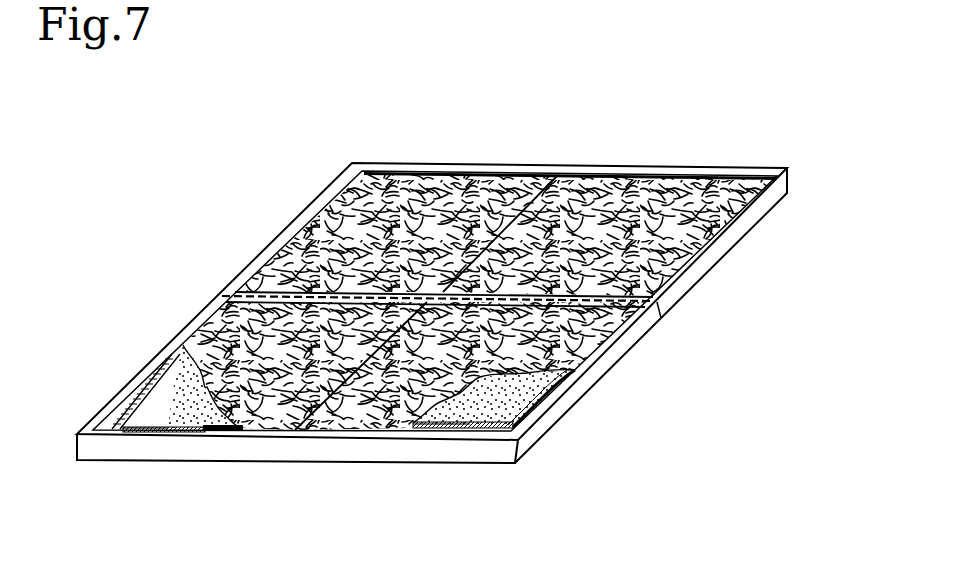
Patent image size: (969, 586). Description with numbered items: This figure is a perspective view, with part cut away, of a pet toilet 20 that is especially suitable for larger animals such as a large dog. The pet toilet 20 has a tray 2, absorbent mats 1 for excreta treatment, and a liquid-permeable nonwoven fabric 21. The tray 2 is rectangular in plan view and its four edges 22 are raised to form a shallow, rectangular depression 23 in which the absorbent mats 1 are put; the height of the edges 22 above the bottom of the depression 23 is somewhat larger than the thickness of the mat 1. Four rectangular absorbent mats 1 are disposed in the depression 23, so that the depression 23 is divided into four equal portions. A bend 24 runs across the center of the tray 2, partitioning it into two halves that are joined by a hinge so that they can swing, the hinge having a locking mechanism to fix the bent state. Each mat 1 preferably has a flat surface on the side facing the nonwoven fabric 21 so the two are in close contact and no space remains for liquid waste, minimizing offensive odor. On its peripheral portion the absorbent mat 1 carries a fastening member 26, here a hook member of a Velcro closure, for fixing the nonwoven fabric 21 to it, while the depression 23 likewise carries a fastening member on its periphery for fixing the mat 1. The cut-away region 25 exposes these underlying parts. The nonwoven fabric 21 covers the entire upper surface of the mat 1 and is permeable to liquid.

The absorbent mat 1 is at (165, 408).
The tray 2 is at (632, 359).
The pet toilet 20 is at (631, 156).
The nonwoven fabric 21 is at (417, 198).
The edges 22 is at (720, 172).
The depression 23 is at (170, 372).
The bend 24 is at (207, 284).
The adhesive strip 25 is at (170, 433).
The fastening member 26 is at (233, 432).